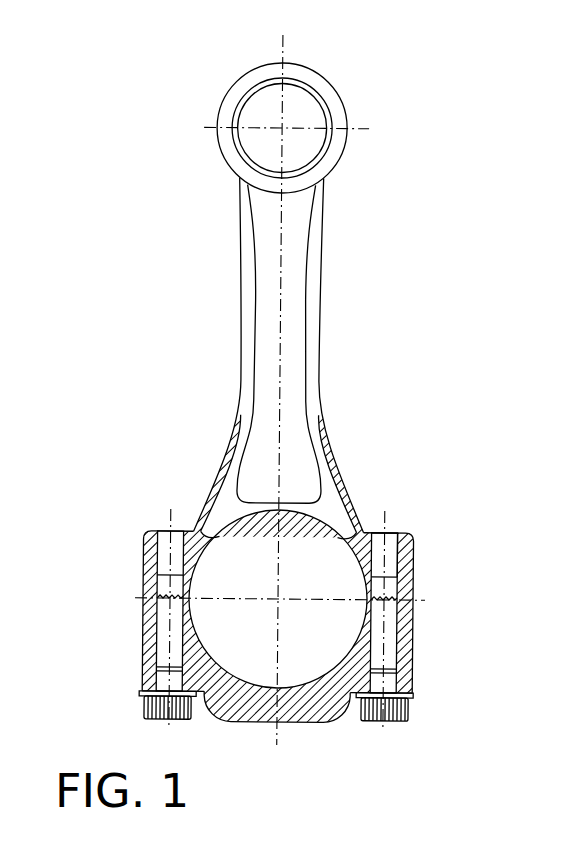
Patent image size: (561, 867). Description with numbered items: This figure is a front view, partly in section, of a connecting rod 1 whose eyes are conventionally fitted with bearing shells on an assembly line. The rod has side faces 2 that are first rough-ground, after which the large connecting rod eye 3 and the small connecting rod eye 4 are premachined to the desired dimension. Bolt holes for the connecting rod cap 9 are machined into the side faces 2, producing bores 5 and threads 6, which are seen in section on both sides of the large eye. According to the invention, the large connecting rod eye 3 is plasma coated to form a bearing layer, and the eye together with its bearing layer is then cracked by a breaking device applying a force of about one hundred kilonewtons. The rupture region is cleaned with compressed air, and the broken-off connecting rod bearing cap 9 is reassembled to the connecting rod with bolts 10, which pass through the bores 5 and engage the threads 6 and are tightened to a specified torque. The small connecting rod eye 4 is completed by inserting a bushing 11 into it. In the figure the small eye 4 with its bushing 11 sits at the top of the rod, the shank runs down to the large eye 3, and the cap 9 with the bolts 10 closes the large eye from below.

The connecting rod 1 is at (138, 332).
The side faces 2 is at (412, 613).
The large connecting rod eye 3 is at (319, 553).
The small connecting rod eye 4 is at (314, 139).
The bores 5 is at (385, 652).
The threads 6 is at (387, 558).
The connecting rod cap 9 is at (298, 721).
The bolts 10 is at (408, 710).
The bushing 11 is at (313, 164).